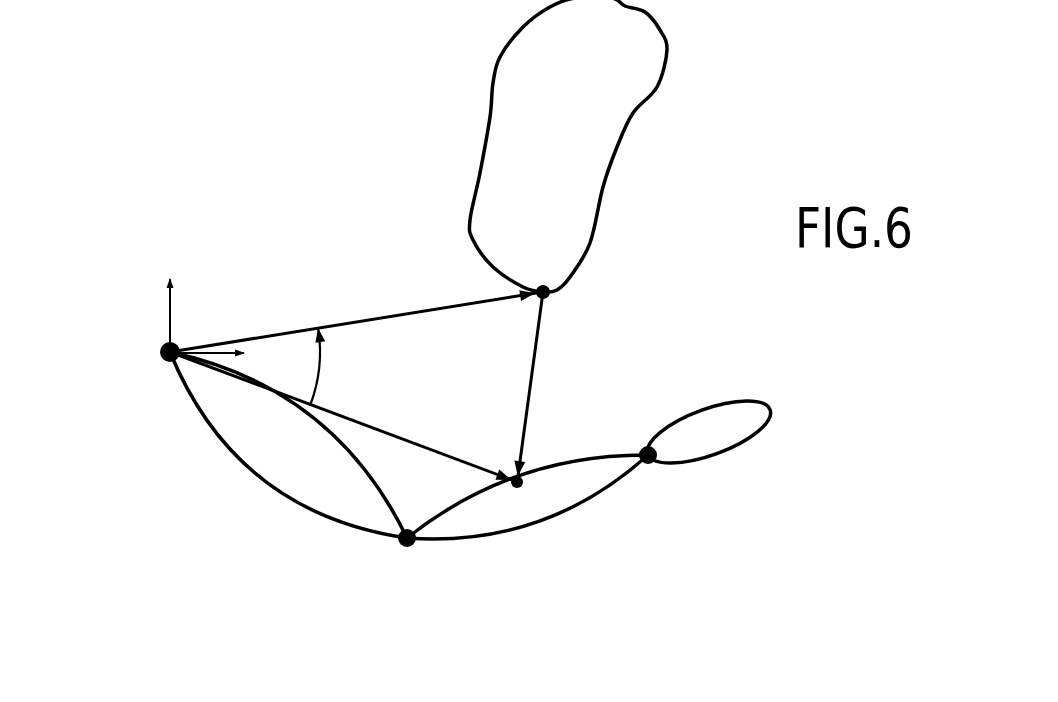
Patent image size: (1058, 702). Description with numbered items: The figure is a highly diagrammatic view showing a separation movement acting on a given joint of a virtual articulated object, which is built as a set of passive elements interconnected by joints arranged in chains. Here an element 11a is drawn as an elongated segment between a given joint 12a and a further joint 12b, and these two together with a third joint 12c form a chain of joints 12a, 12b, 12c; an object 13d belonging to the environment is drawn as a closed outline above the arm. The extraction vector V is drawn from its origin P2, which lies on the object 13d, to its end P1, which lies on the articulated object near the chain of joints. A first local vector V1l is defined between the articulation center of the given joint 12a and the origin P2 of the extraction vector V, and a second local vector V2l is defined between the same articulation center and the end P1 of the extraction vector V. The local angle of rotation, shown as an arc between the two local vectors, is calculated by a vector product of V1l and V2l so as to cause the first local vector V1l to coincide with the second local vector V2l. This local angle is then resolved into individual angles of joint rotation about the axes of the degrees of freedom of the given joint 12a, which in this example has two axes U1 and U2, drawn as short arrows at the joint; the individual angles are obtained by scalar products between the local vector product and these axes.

The object belonging to the environment 13d is at (635, 72).
The element 11a is at (275, 467).
The given joint 12a is at (162, 351).
The joint 12b is at (407, 547).
The joint 12c is at (653, 463).
The end of the extraction vector P1 is at (520, 487).
The origin of the extraction vector P2 is at (550, 296).
The extraction vector V is at (532, 383).
The first local vector V1l is at (392, 317).
The second local vector V2l is at (390, 432).
The axis of degree of freedom U1 is at (218, 357).
The axis of degree of freedom U2 is at (167, 322).